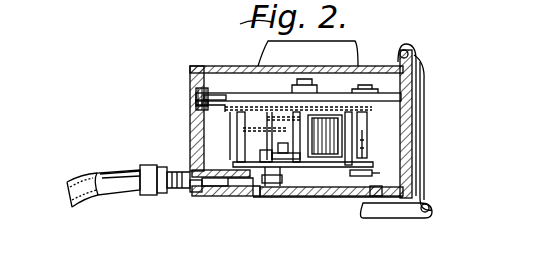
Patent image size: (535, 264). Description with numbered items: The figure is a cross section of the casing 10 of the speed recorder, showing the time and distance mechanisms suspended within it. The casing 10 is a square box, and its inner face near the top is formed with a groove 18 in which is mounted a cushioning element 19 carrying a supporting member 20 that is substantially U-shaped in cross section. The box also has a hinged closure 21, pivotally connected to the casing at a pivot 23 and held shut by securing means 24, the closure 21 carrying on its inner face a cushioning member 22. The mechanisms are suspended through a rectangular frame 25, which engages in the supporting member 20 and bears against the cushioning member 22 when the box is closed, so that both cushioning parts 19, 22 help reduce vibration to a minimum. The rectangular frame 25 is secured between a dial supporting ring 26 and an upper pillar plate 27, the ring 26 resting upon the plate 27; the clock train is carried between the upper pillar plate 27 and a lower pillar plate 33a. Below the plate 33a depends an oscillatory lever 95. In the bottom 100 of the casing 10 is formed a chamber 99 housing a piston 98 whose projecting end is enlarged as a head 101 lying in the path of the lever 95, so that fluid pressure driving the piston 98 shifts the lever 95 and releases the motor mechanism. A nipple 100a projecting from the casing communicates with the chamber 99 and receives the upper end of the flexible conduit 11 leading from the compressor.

The casing 10 is at (190, 149).
The conduit 11 is at (78, 188).
The groove 18 is at (190, 100).
The cushioning element 19 is at (190, 105).
The supporting member 20 is at (190, 88).
The hinged closure 21 is at (398, 154).
The cushioning member 22 is at (422, 88).
The pivotal connection 23 is at (410, 45).
The securing means 24 is at (363, 205).
The rectangular frame 25 is at (247, 93).
The dial supporting ring 26 is at (292, 93).
The upper pillar plate 27 is at (232, 108).
The lower pillar plate 33a is at (373, 177).
The oscillatory lever 95 is at (296, 176).
The piston 98 is at (226, 200).
The chamber 99 is at (193, 196).
The bottom 100 is at (275, 198).
The nipple 100a is at (185, 168).
The enlarged head 101 is at (260, 190).